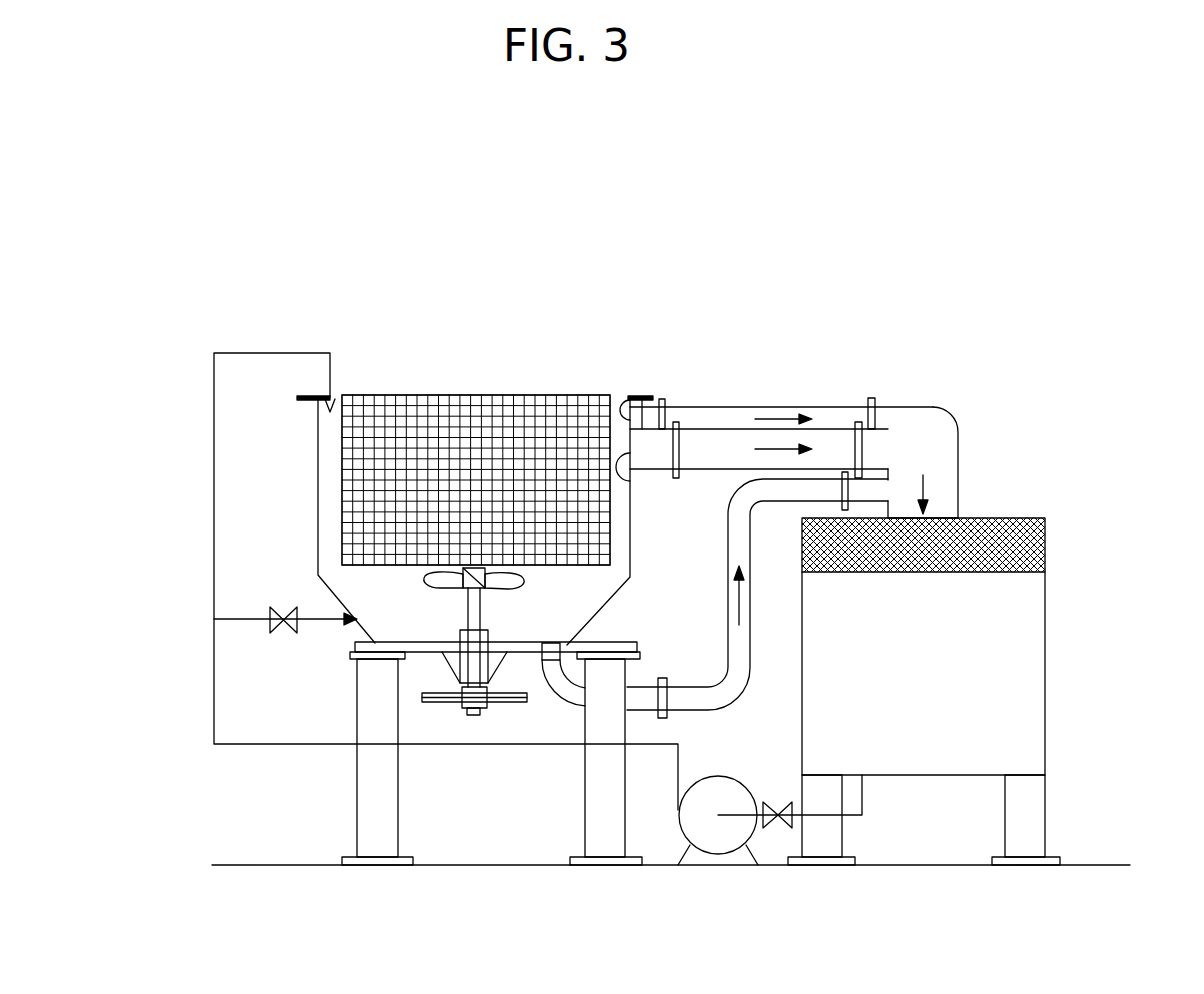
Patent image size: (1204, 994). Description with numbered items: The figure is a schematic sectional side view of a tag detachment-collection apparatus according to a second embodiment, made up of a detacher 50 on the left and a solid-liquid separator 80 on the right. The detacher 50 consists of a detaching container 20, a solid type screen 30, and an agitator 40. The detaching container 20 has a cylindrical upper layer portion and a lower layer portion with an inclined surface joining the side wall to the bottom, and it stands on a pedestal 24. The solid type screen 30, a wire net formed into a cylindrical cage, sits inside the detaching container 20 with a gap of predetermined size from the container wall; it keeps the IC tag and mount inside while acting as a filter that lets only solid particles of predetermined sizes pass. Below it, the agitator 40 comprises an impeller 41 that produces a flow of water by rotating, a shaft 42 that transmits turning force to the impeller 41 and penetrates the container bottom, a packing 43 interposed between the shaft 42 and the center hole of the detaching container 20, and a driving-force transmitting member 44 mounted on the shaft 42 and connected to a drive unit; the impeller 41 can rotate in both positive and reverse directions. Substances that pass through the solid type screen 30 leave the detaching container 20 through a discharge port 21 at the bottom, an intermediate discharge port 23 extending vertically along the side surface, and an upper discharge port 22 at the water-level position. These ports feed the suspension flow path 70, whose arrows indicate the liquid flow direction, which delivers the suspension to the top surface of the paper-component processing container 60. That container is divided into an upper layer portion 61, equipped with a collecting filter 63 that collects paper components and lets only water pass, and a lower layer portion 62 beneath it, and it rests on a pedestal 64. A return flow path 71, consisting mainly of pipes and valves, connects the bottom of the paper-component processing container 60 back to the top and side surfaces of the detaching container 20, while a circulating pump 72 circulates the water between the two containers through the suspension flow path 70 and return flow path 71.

The detaching container 20 is at (318, 448).
The discharge port 21 is at (552, 645).
The upper discharge port 22 is at (618, 397).
The intermediate discharge port 23 is at (632, 483).
The pedestal 24 is at (357, 820).
The solid type screen 30 is at (342, 502).
The agitator 40 is at (519, 726).
The impeller 41 is at (425, 580).
The shaft 42 is at (466, 608).
The packing 43 is at (448, 672).
The driving-force transmitting member 44 is at (480, 708).
The detacher 50 is at (537, 347).
The paper-component processing container 60 is at (1087, 601).
The upper layer portion 61 is at (1046, 545).
The lower layer portion 62 is at (1046, 670).
The collecting filter 63 is at (998, 518).
The pedestal 64 is at (1045, 815).
The suspension flow path 70 is at (767, 405).
The return flow path 71 is at (660, 748).
The circulating pump 72 is at (737, 857).
The solid-liquid separator 80 is at (1019, 416).